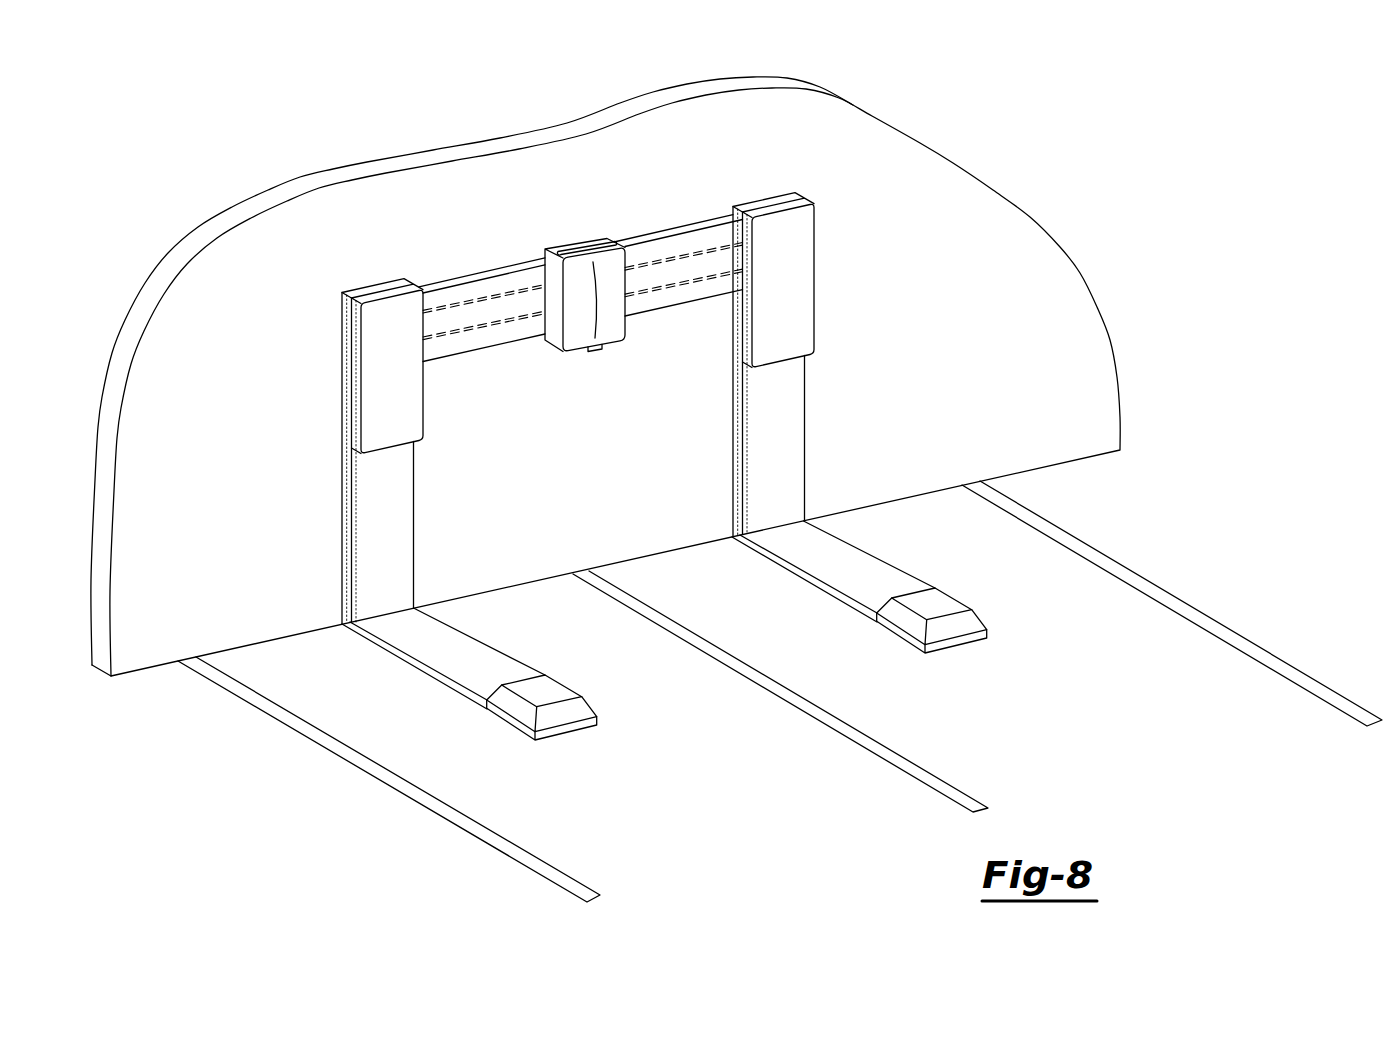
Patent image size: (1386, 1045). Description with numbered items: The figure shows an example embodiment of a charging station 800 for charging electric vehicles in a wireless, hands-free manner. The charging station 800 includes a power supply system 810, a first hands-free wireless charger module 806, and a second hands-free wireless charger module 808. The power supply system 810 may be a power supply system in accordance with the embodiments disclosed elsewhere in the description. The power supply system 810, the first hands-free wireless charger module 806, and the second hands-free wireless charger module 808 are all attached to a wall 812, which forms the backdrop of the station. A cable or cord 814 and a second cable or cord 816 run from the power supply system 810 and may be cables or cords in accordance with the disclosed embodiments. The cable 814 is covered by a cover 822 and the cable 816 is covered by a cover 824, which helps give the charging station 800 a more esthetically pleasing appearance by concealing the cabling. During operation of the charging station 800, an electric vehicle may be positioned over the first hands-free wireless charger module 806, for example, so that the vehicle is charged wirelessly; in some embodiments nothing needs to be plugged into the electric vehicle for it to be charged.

The charging station 800 is at (736, 486).
The first hands-free wireless charger module 806 is at (553, 689).
The second hands-free wireless charger module 808 is at (943, 602).
The power supply system 810 is at (581, 292).
The wall 812 is at (235, 548).
The cable or cord 814 is at (497, 296).
The cable or cord 816 is at (700, 280).
The cover 822 is at (492, 346).
The cover 824 is at (653, 310).